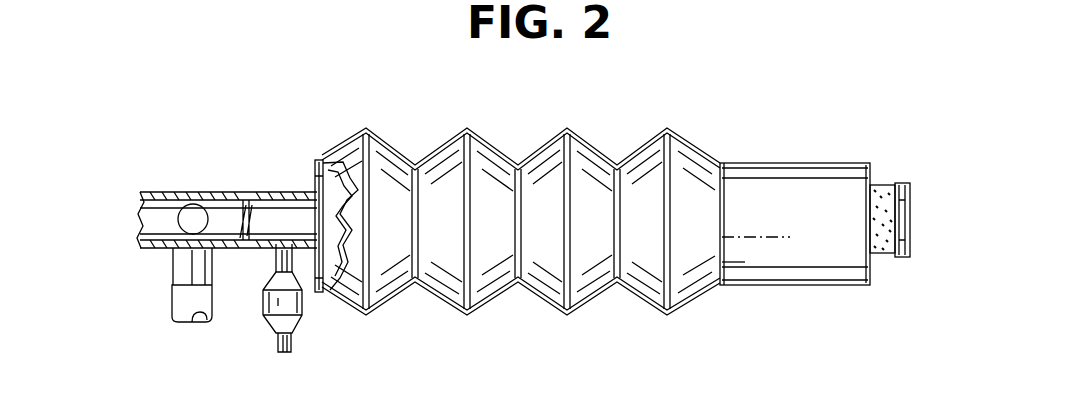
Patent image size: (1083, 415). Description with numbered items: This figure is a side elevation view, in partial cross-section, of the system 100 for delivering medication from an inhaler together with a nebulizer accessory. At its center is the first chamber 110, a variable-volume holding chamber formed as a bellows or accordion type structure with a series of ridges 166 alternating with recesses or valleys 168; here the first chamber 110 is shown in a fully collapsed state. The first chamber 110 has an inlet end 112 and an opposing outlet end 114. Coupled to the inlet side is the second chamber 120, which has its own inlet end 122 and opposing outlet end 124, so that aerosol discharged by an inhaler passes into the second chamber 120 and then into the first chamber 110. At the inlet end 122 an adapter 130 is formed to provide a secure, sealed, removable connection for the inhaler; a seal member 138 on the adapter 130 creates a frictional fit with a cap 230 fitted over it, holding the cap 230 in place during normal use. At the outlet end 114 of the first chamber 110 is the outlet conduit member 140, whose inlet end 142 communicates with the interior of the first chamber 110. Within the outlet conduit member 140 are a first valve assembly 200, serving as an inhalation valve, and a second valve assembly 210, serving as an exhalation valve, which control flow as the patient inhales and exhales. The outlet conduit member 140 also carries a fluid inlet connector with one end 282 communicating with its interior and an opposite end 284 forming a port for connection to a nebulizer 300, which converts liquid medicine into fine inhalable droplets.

The system 100 is at (405, 105).
The first chamber 110 is at (558, 308).
The inlet end 112 is at (730, 258).
The outlet end 114 is at (316, 168).
The second chamber 120 is at (823, 158).
The inlet end 122 is at (868, 268).
The outlet end 124 is at (715, 198).
The adapter 130 is at (877, 190).
The seal member 138 is at (887, 253).
The outlet conduit member 140 is at (155, 250).
The inlet end 142 is at (333, 290).
The ridges 166 is at (462, 127).
The valleys 168 is at (617, 163).
The first valve assembly 200 is at (245, 190).
The second valve assembly 210 is at (193, 214).
The cap 230 is at (880, 233).
The end of connector 282 is at (290, 243).
The opposite end 284 is at (296, 270).
The nebulizer 300 is at (260, 314).